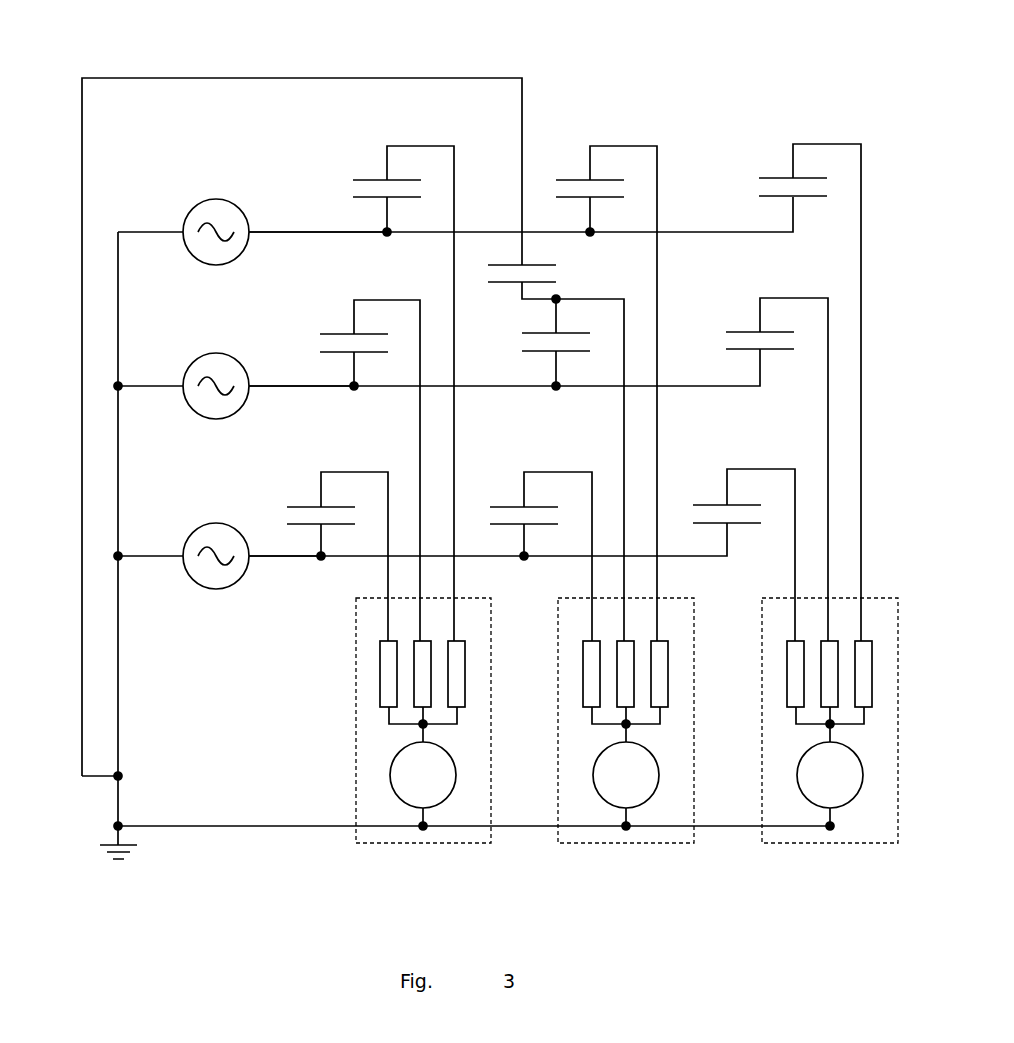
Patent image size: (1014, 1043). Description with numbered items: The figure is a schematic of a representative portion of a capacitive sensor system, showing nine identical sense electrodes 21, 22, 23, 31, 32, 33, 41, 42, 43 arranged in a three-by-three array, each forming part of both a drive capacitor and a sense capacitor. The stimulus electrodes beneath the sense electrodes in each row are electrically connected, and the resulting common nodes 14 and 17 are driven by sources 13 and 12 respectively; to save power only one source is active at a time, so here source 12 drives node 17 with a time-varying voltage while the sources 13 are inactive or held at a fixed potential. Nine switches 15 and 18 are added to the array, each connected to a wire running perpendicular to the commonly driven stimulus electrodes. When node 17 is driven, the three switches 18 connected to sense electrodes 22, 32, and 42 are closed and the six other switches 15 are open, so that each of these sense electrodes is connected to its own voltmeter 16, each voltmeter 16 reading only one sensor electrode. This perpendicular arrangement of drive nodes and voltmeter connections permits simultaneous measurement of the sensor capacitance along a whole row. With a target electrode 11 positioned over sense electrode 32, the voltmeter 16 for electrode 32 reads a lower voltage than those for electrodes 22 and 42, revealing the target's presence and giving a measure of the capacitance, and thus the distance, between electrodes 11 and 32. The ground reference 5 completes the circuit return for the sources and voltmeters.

The ground 5 is at (114, 818).
The target electrode 11 is at (504, 257).
The source 12 is at (181, 368).
The source 13 is at (181, 214).
The common node 14 is at (298, 228).
The switch 15 is at (379, 712).
The voltmeter 16 is at (446, 806).
The common node 17 is at (298, 382).
The switch 18 is at (408, 637).
The sense electrode 21 is at (304, 503).
The sense electrode 22 is at (338, 331).
The sense electrode 23 is at (371, 177).
The sense electrode 31 is at (507, 503).
The sense electrode 32 is at (531, 329).
The sense electrode 33 is at (575, 177).
The sense electrode 41 is at (709, 501).
The sense electrode 42 is at (742, 329).
The sense electrode 43 is at (775, 175).